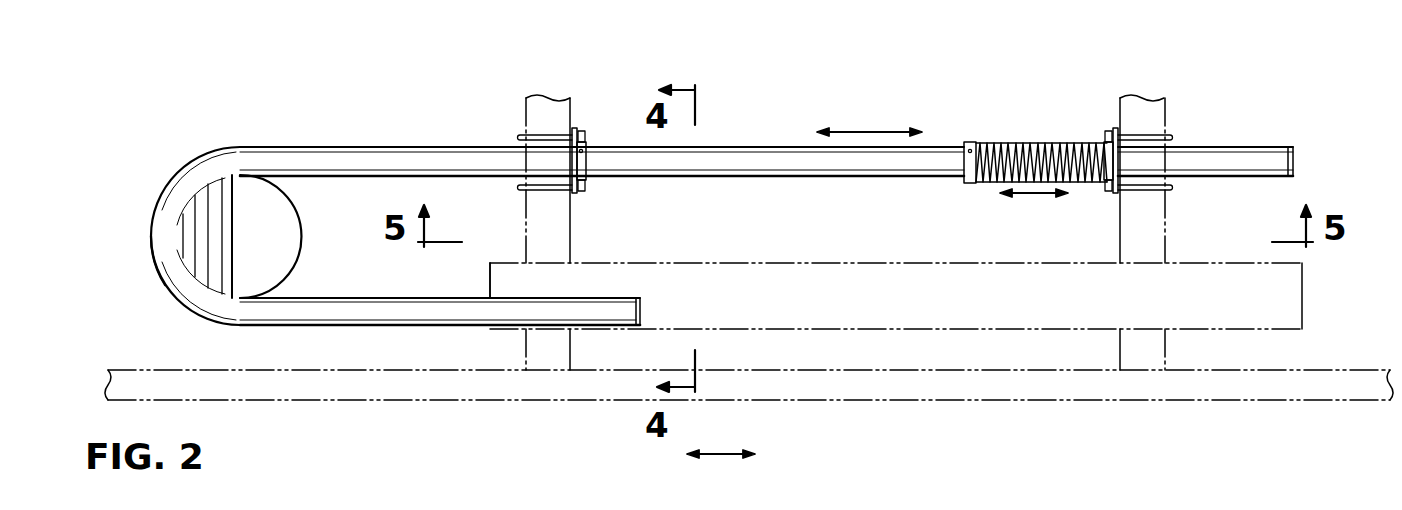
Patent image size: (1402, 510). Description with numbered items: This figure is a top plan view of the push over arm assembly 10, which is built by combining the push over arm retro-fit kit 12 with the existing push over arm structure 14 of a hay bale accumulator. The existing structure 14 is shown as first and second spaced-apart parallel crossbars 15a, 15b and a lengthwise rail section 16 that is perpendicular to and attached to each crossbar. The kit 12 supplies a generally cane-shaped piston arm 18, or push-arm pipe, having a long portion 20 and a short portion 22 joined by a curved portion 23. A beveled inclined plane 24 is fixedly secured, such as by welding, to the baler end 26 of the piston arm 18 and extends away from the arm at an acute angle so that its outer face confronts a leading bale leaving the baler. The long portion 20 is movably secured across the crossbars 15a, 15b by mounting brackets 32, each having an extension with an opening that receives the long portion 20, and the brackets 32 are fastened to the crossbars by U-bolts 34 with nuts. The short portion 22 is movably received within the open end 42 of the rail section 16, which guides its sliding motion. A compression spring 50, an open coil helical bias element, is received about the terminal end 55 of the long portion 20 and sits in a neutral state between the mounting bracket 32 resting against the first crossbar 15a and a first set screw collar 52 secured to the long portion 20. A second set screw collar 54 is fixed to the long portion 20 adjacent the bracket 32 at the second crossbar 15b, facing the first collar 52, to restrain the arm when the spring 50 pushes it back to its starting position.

The push over arm assembly 10 is at (123, 123).
The push over arm retro-fit kit 12 is at (691, 203).
The push over arm structure 14 is at (1313, 318).
The first parallel crossbar 15a is at (1118, 252).
The second parallel crossbar 15b is at (522, 215).
The lengthwise rail section 16 is at (727, 262).
The piston arm 18 is at (743, 134).
The long portion 20 is at (757, 147).
The short portion 22 is at (345, 300).
The curved portion 23 is at (150, 221).
The inclined plane 24 is at (233, 217).
The baler end 26 is at (150, 238).
The mounting bracket 32 is at (575, 193).
The U-bolt 34 is at (547, 139).
The open end 42 is at (488, 282).
The compression spring 50 is at (1032, 143).
The first set screw collar 52 is at (972, 142).
The second set screw collar 54 is at (586, 160).
The terminal end 55 is at (1277, 147).